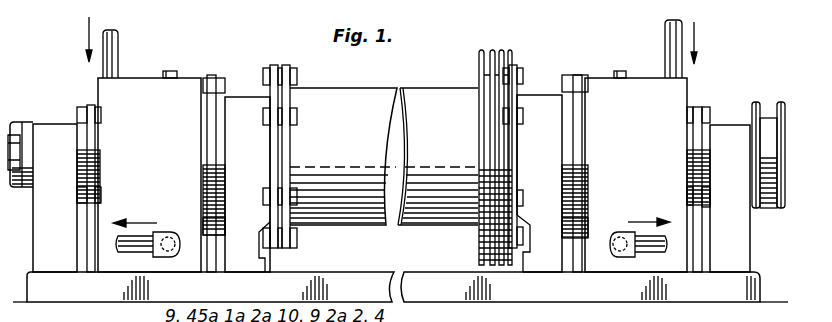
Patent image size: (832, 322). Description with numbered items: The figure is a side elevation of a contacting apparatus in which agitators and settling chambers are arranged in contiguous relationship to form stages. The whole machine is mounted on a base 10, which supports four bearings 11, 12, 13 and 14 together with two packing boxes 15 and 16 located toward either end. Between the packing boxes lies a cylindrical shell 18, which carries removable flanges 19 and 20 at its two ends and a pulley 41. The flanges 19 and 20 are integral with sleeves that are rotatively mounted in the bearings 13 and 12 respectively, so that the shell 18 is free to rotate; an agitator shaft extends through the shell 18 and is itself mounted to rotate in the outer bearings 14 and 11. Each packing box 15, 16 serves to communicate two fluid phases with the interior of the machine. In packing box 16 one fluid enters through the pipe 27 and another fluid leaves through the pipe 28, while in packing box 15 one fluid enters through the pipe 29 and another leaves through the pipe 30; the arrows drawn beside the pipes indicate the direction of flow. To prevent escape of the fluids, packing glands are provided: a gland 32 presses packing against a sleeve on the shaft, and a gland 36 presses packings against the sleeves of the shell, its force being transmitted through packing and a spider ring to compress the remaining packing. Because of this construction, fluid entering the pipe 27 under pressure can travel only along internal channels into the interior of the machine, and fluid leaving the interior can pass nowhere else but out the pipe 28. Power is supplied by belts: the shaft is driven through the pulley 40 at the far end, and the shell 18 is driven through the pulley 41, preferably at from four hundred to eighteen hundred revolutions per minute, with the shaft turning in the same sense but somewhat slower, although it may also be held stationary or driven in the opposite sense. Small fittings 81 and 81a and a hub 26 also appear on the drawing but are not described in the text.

The base 10 is at (600, 290).
The bearing 11 is at (740, 226).
The bearing 12 is at (534, 96).
The bearing 13 is at (260, 163).
The bearing 14 is at (62, 218).
The packing box 15 is at (650, 149).
The packing box 16 is at (167, 153).
The cylindrical shell 18 is at (355, 92).
The removable flange 19 is at (276, 64).
The removable flange 20 is at (514, 140).
The hub 26 is at (22, 120).
The pipe 27 is at (118, 46).
The pipe 28 is at (176, 232).
The pipe 29 is at (665, 34).
The pipe 30 is at (615, 232).
The gland 32 is at (88, 106).
The gland 36 is at (215, 77).
The pulley 40 is at (762, 102).
The pulley 41 is at (505, 52).
The bolt 81 is at (172, 72).
The bolt 81a is at (630, 62).